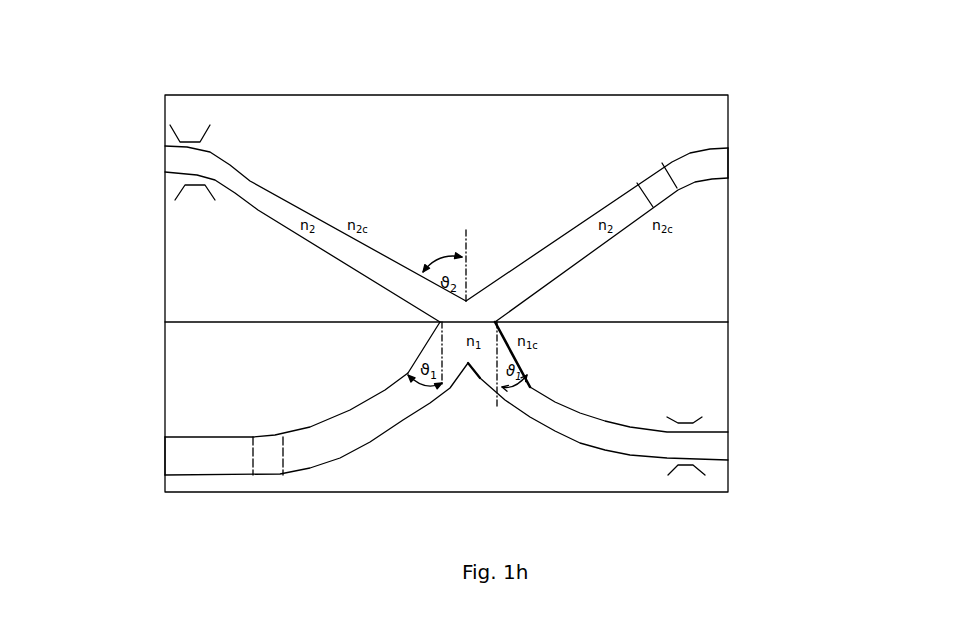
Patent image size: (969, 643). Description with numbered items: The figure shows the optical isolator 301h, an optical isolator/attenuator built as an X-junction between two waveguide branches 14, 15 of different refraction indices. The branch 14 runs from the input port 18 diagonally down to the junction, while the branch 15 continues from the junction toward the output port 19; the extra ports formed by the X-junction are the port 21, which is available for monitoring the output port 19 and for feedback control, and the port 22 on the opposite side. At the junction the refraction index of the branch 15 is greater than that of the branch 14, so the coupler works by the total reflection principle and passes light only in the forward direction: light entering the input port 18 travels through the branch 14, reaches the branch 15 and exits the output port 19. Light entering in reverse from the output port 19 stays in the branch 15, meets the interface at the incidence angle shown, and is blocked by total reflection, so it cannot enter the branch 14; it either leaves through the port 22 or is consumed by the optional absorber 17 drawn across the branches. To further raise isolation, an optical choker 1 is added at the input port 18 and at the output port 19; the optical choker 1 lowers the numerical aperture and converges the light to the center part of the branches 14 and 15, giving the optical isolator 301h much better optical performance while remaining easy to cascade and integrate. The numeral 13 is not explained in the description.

The optical choker 1 is at (187, 161).
The upper right waveguide arm 13 is at (577, 243).
The branch 14 is at (343, 248).
The branch 15 is at (528, 388).
The absorber 17 is at (265, 448).
The input port 18 is at (135, 162).
The output port 19 is at (759, 446).
The port 21 is at (786, 163).
The port 22 is at (111, 456).
The optical isolator 301h is at (446, 218).